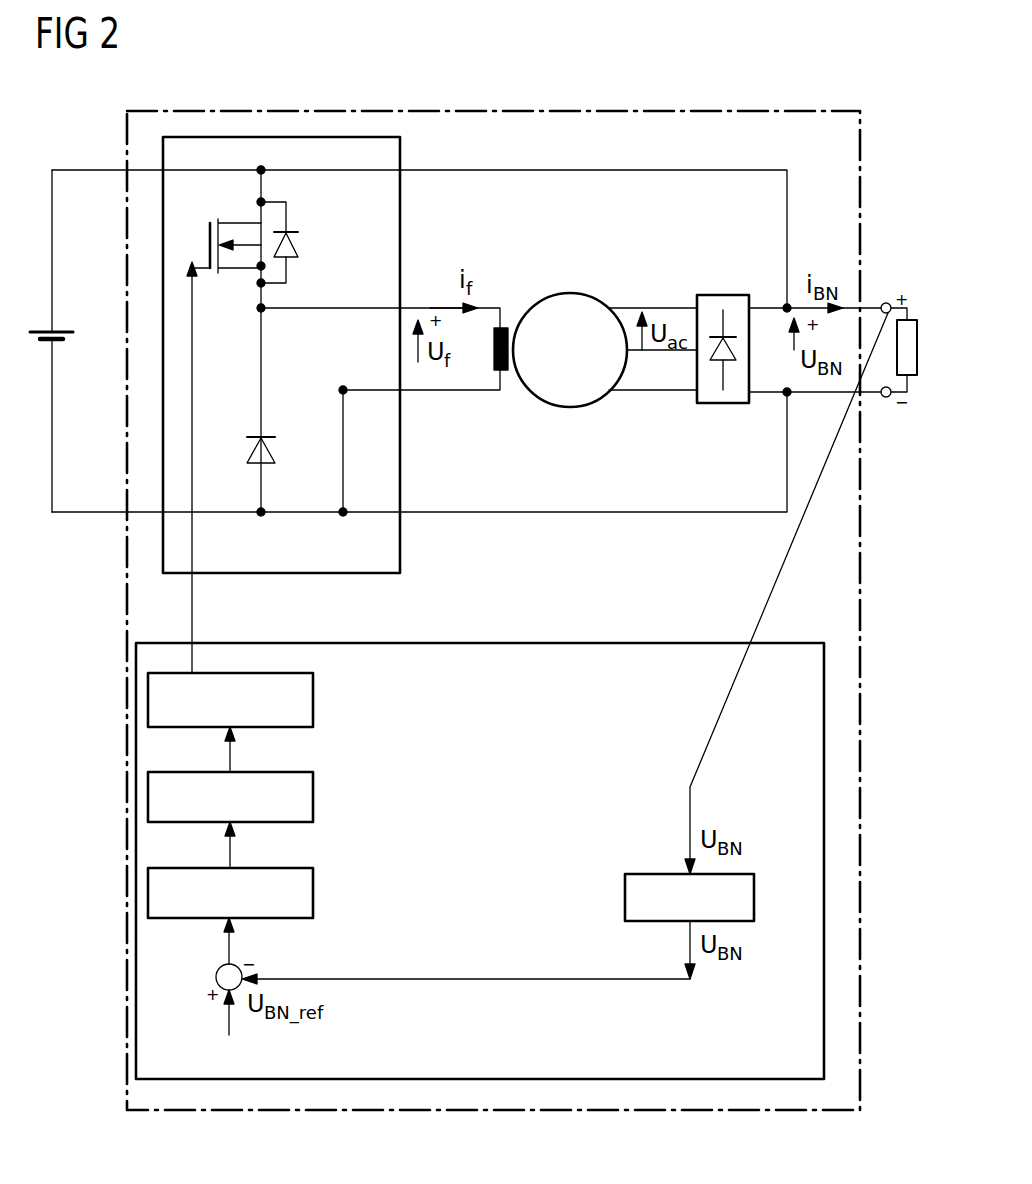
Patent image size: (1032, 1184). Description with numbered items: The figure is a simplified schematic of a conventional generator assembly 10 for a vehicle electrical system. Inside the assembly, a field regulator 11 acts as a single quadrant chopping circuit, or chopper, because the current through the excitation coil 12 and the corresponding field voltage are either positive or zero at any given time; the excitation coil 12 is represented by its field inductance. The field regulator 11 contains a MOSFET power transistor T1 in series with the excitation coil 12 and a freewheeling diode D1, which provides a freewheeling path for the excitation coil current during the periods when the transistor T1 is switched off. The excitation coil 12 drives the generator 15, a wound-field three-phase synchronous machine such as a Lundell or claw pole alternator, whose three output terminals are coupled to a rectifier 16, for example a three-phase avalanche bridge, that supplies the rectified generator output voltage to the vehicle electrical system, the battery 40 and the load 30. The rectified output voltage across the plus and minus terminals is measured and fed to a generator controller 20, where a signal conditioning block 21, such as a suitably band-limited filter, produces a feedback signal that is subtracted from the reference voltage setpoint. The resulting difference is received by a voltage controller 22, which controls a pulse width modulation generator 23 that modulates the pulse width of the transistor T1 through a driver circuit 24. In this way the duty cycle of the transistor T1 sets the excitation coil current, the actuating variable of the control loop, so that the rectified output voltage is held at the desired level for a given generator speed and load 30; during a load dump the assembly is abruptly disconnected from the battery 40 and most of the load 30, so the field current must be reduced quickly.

The generator assembly 10 is at (568, 111).
The field regulator 11 is at (331, 405).
The excitation coil 12 is at (505, 325).
The generator 15 is at (572, 293).
The rectifier 16 is at (720, 404).
The generator controller 20 is at (568, 643).
The signal conditioning block 21 is at (754, 898).
The voltage controller 22 is at (313, 890).
The pulse width modulation generator 23 is at (313, 797).
The driver circuit 24 is at (313, 700).
The load 30 is at (916, 378).
The battery 40 is at (67, 337).
The MOSFET transistor T1 is at (244, 290).
The freewheeling diode D1 is at (272, 442).